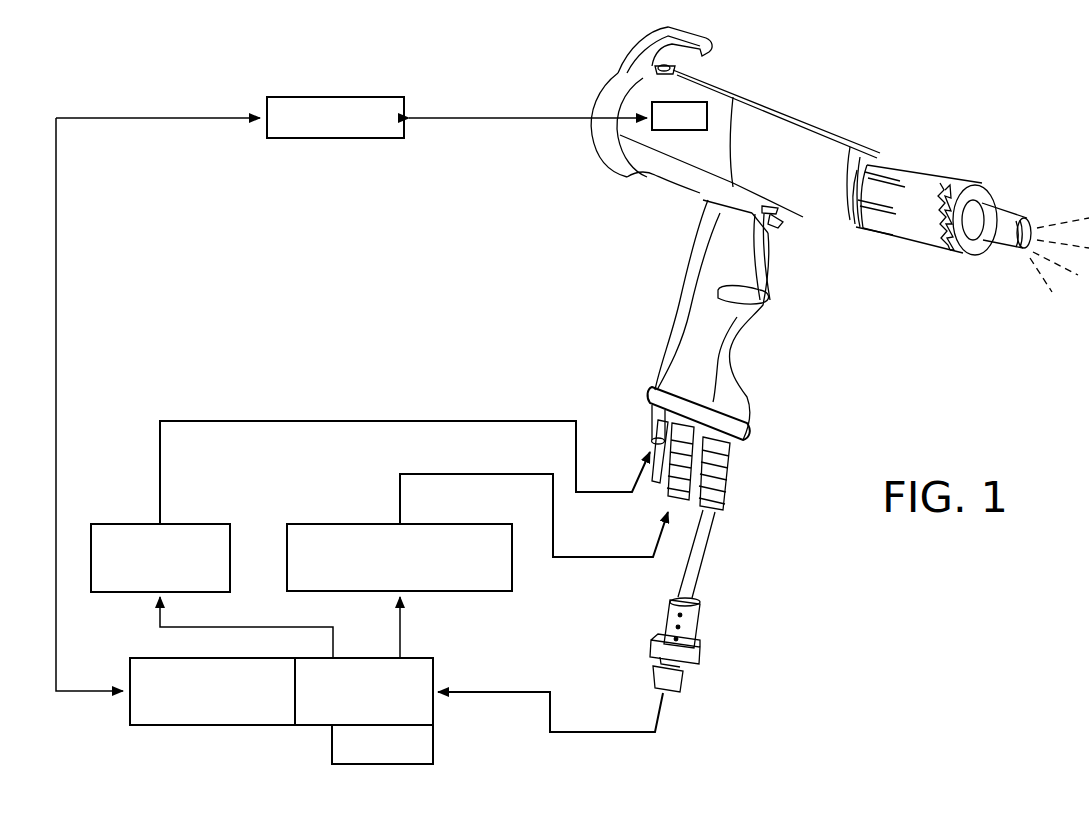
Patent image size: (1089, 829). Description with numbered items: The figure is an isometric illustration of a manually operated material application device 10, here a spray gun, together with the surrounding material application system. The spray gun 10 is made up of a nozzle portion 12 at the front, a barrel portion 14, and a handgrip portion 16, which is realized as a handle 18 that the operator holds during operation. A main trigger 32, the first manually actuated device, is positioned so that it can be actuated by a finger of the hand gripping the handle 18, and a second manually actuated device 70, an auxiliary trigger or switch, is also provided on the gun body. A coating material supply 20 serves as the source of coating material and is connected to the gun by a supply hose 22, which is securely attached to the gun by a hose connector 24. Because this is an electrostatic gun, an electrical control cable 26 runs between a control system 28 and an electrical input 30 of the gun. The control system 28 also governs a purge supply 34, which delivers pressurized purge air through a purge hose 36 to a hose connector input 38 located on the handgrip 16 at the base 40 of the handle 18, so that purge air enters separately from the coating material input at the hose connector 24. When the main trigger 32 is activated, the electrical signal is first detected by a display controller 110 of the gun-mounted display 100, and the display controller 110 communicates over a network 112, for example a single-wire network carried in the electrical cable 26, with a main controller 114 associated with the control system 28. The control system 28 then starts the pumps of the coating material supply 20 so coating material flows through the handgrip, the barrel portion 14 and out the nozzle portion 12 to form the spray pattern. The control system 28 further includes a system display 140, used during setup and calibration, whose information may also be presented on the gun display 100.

The material application device 10 is at (782, 279).
The nozzle portion 12 is at (983, 270).
The barrel portion 14 is at (735, 80).
The handgrip portion 16 is at (667, 320).
The handle 18 is at (738, 352).
The coating material supply 20 is at (472, 596).
The supply hose 22 is at (400, 497).
The hose connector 24 is at (665, 494).
The electrical control cable 26 is at (700, 563).
The control system 28 is at (314, 731).
The electrical input 30 is at (721, 499).
The main trigger 32 is at (762, 278).
The purge supply 34 is at (126, 521).
The purge hose 36 is at (222, 420).
The hose connector input 38 is at (636, 448).
The base of the handle 40 is at (657, 400).
The second manually actuated device 70 is at (792, 233).
The display 100 is at (782, 279).
The display controller 110 is at (558, 116).
The network 112 is at (367, 97).
The main controller 114 is at (197, 727).
The system display 140 is at (434, 748).